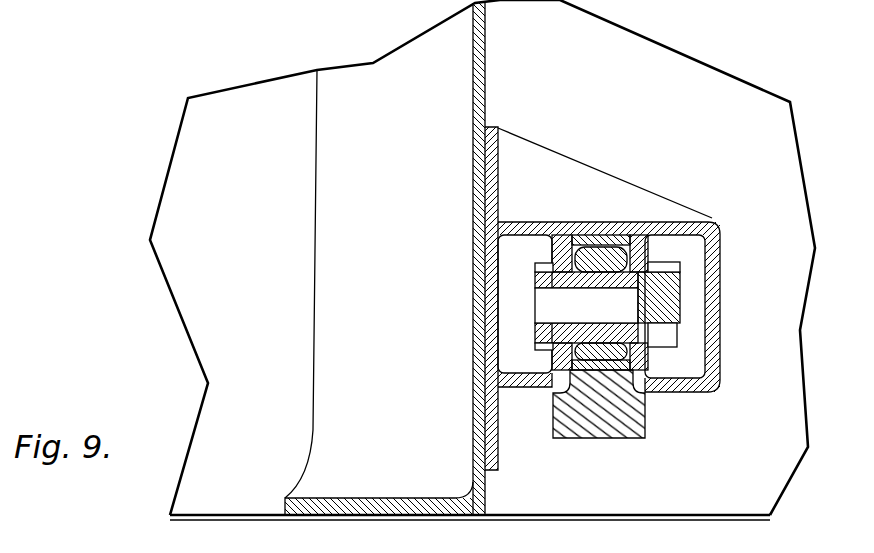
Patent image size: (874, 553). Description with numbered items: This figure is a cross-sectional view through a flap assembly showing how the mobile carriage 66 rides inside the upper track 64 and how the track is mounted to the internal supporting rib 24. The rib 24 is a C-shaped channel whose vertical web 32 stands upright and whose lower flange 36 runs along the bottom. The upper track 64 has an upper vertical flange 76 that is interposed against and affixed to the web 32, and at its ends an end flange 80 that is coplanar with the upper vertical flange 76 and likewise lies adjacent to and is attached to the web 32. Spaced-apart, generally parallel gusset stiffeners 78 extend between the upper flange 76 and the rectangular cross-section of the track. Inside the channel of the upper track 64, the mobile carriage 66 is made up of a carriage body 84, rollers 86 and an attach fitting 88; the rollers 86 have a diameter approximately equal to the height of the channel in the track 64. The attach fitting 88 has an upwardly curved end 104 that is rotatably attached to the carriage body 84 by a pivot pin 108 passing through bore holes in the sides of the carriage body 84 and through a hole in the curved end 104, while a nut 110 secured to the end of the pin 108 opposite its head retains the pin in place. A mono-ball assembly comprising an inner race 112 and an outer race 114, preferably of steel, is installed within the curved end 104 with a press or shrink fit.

The rib 24 is at (383, 228).
The vertical web 32 is at (488, 60).
The lower flange 36 is at (393, 497).
The upper track 64 is at (597, 314).
The mobile carriage 66 is at (653, 440).
The upper vertical flange 76 is at (497, 177).
The gusset stiffener 78 is at (550, 207).
The end flange 80 is at (497, 460).
The carriage body 84 is at (696, 243).
The roller 86 is at (513, 364).
The attach fitting 88 is at (607, 447).
The curved end 104 is at (640, 233).
The pivot pin 108 is at (533, 300).
The nut 110 is at (668, 337).
The inner race 112 is at (647, 386).
The outer race 114 is at (603, 232).